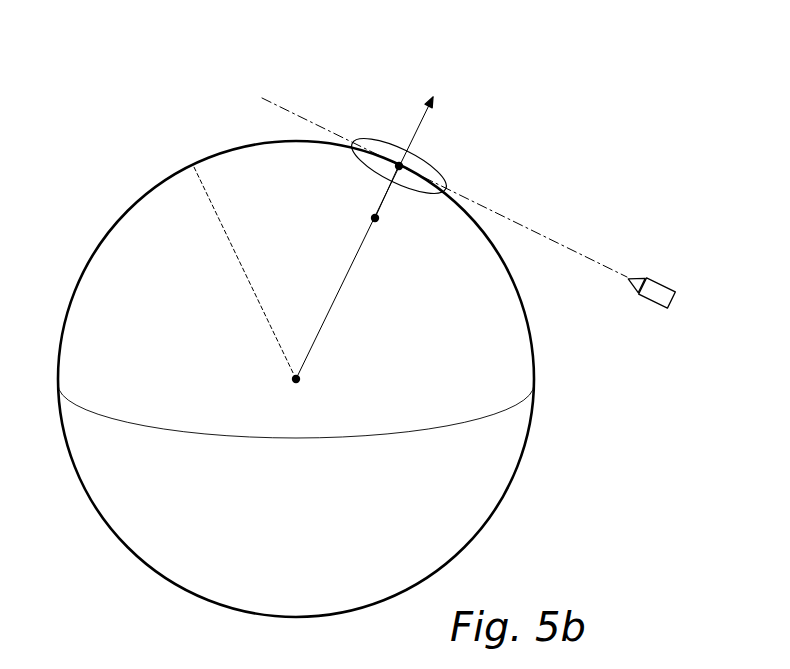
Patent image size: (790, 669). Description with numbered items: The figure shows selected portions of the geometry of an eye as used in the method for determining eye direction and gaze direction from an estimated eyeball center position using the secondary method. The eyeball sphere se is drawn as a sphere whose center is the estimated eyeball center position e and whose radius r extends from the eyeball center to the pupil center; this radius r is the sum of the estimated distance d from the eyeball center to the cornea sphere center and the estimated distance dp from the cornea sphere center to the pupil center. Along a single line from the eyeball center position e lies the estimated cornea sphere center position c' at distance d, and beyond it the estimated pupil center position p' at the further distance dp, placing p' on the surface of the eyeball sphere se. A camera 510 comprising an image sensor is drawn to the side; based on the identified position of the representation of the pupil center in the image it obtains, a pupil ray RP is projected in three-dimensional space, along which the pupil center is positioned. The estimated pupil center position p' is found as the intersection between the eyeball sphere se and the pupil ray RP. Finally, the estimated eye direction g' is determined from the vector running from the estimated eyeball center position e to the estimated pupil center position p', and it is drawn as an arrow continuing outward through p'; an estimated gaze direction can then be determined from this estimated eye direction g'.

The camera 510 is at (652, 302).
The eyeball sphere se is at (523, 458).
The estimated eyeball center position e is at (291, 383).
The estimated radius r is at (250, 282).
The estimated distance from the eyeball center to the cornea center d is at (333, 303).
The estimated eye direction g' is at (398, 90).
The estimated cornea sphere center position c' is at (405, 249).
The estimated distance from the cornea sphere center to the pupil center dp is at (385, 195).
The estimated pupil center position p' is at (417, 160).
The pupil ray RP is at (540, 235).